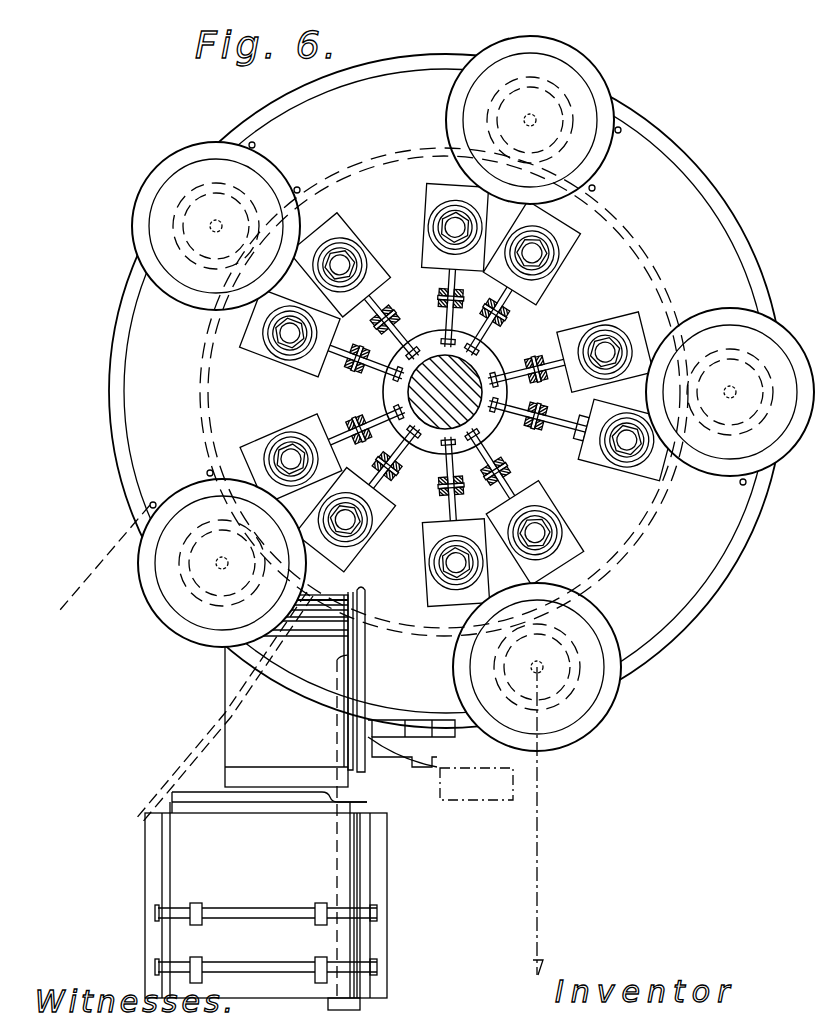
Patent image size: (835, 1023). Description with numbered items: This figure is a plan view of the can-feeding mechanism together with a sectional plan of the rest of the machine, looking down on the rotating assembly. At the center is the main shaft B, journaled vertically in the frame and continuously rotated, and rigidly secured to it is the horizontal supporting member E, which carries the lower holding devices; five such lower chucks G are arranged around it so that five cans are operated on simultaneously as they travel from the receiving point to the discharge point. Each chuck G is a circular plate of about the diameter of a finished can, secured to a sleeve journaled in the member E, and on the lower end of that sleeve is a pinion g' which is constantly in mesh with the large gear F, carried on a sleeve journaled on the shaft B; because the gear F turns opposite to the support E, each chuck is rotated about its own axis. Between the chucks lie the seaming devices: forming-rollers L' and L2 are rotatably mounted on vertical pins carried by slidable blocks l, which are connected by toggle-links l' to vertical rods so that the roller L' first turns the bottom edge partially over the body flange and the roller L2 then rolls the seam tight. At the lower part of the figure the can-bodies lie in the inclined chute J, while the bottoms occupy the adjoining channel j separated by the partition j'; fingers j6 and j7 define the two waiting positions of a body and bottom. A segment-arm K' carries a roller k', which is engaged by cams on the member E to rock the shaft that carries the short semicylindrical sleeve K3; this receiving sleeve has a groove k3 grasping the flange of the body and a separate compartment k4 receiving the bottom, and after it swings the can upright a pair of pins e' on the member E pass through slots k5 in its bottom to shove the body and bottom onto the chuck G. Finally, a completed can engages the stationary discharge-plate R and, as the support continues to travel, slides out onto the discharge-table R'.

The horizontal supporting member E is at (446, 391).
The large gear F is at (444, 392).
The lower holding-chuck G is at (270, 157).
The pinion g' is at (728, 447).
The pins e' is at (448, 317).
The main shaft B is at (440, 468).
The slidable blocks l is at (420, 394).
The toggle-links l' is at (453, 388).
The forming-roller L' is at (447, 383).
The forming-roller L2 is at (556, 258).
The stationary discharge-plate R is at (286, 691).
The discharge-table R' is at (186, 664).
The roller k' is at (383, 679).
The slots k5 is at (365, 700).
The compartment k4 is at (368, 690).
The groove k3 is at (348, 727).
The semicylindrical sleeve K3 is at (269, 787).
The segment-arm K' is at (440, 760).
The chute J is at (266, 832).
The partition j' is at (327, 905).
The channel j is at (382, 860).
The fingers j7 is at (318, 905).
The fingers j6 is at (200, 960).